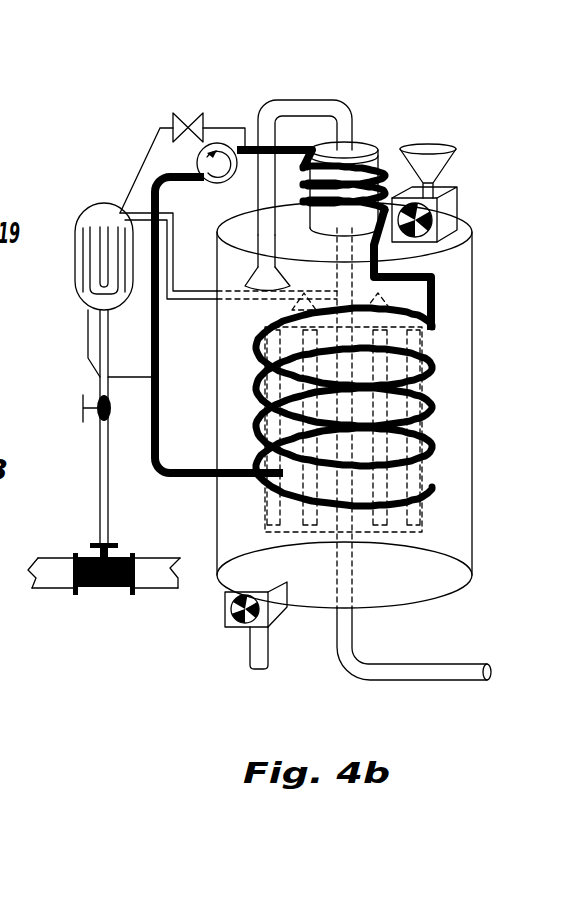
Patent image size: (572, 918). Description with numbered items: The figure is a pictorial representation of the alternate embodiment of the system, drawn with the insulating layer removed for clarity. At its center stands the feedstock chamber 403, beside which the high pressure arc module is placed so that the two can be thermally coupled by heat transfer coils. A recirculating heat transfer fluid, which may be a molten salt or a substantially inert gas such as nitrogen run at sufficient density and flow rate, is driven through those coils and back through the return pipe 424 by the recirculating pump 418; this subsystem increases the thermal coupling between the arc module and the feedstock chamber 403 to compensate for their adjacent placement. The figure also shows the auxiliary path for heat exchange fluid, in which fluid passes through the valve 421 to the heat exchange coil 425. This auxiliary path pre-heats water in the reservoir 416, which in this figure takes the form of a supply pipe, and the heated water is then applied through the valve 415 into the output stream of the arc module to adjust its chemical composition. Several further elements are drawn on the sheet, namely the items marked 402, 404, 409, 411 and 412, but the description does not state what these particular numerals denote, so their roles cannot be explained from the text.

The feed hopper with metering device 402 is at (457, 195).
The feedstock chamber 403 is at (472, 405).
The bottom discharge device 404 is at (225, 628).
The heated inlet vessel with heating coil 409 is at (350, 170).
The heating coil 411 is at (420, 525).
The outlet pipe 412 is at (460, 680).
The valve 415 is at (98, 420).
The reservoir 416 is at (53, 588).
The recirculating pump 418 is at (188, 157).
The valve 421 is at (190, 112).
The return pipe 424 is at (200, 482).
The heat exchange coil 425 is at (97, 222).